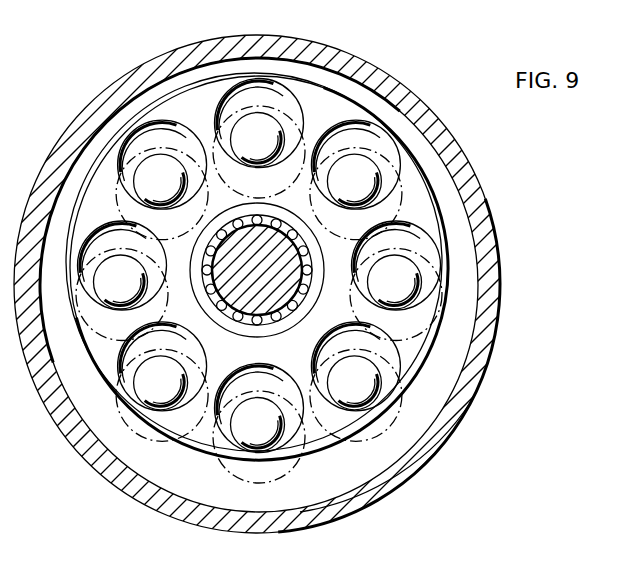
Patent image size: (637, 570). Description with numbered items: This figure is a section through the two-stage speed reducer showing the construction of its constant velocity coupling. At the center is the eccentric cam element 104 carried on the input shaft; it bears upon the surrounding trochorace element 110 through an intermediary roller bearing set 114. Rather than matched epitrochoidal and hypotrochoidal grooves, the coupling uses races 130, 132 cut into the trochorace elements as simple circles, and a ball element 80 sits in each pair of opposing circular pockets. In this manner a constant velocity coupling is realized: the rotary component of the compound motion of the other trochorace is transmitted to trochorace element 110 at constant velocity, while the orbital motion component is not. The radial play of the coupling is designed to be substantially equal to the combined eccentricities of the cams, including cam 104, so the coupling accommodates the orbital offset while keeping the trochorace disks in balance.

The trochorace element 110 is at (128, 117).
The ball element 80 is at (268, 132).
The race 130 is at (392, 160).
The race 132 is at (420, 414).
The roller bearing set 114 is at (213, 303).
The eccentric/cam element 104 is at (287, 277).